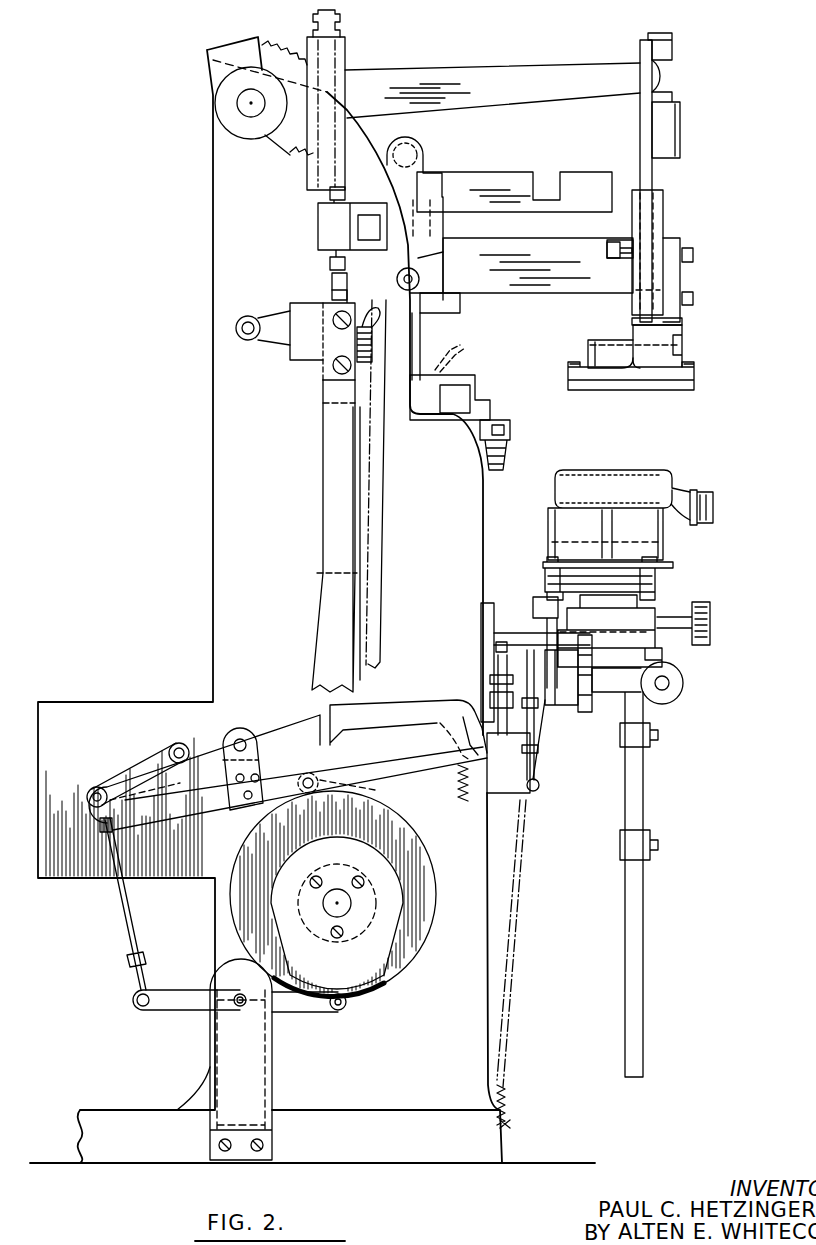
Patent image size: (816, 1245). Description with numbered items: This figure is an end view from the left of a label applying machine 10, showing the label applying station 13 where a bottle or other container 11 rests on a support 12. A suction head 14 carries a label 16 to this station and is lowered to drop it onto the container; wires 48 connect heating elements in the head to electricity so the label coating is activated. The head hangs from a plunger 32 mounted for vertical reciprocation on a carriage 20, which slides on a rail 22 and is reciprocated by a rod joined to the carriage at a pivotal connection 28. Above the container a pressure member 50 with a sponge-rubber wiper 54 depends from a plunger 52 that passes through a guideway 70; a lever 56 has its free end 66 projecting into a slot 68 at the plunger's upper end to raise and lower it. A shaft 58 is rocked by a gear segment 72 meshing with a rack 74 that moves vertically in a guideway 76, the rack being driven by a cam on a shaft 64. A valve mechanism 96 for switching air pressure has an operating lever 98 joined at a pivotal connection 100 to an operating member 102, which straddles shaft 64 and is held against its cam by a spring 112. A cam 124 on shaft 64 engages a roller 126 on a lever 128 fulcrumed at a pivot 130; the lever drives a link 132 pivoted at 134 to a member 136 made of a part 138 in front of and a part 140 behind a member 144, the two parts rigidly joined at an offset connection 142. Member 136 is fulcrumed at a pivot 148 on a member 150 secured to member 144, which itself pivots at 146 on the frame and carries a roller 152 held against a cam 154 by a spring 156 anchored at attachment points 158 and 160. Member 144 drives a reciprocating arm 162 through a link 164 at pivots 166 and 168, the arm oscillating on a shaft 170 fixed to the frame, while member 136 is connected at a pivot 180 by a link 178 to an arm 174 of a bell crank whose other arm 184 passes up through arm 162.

The label applying machine 10 is at (745, 346).
The bottle or other container 11 is at (640, 468).
The support 12 is at (665, 527).
The label applying station 13 is at (753, 506).
The suction head 14 is at (476, 395).
The label 16 is at (500, 443).
The carriage 20 is at (462, 230).
The rail 22 is at (540, 245).
The pivotal connection 28 is at (406, 279).
The plunger 32 is at (416, 333).
The wires 48 is at (460, 348).
The pressure member 50 is at (698, 381).
The plunger 52 is at (655, 180).
The resilient contact member or wiper 54 is at (582, 348).
The lever 56 is at (510, 70).
The shaft 58 is at (237, 103).
The shaft 64 is at (330, 908).
The free end 66 is at (670, 82).
The slot 68 is at (670, 52).
The guideway 70 is at (663, 222).
The gear segment 72 is at (300, 58).
The rack 74 is at (340, 26).
The guideway 76 is at (345, 60).
The valve mechanism 96 is at (242, 318).
The operating lever 98 is at (273, 322).
The pivotal connection 100 is at (290, 345).
The operating member 102 is at (325, 522).
The spring 112 is at (378, 482).
The cam 124 is at (392, 905).
The cam follower or roller 126 is at (348, 1008).
The lever 128 is at (288, 1012).
The pivot 130 is at (236, 1003).
The link 132 is at (127, 915).
The pivot 134 is at (100, 790).
The member 136 is at (172, 715).
The part 138 is at (132, 750).
The part 140 is at (288, 730).
The offset connection 142 is at (185, 745).
The member 144 is at (192, 810).
The pivot 146 is at (110, 830).
The pivot 148 is at (243, 740).
The member 150 is at (243, 805).
The cam follower or roller 152 is at (436, 804).
The cam 154 is at (407, 970).
The spring 156 is at (490, 868).
The attachment point 158 is at (452, 725).
The attachment point 160 is at (508, 1122).
The reciprocating arm 162 is at (492, 600).
The link 164 is at (483, 710).
The pivot 166 is at (505, 757).
The pivot 168 is at (496, 644).
The shaft 170 is at (600, 670).
The arm 174 is at (548, 700).
The link 178 is at (545, 735).
The pivot 180 is at (540, 785).
The arm 184 is at (543, 597).